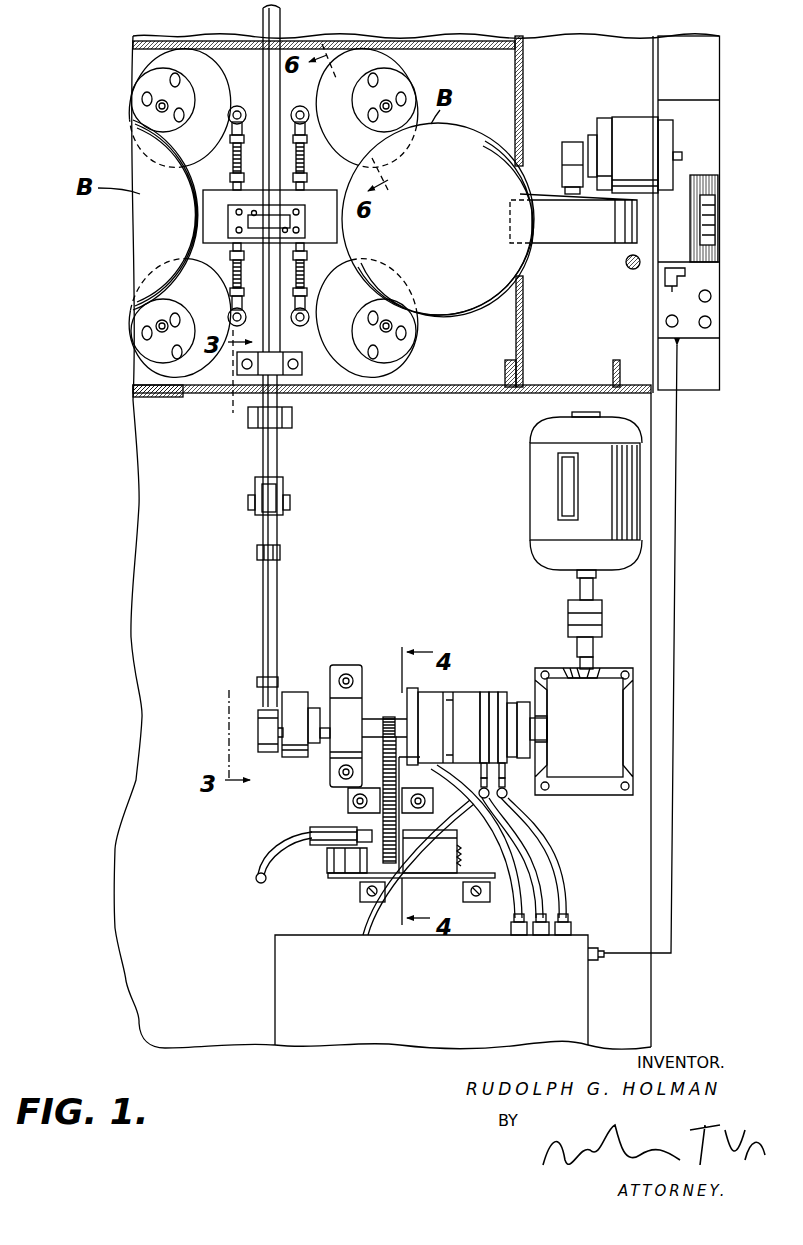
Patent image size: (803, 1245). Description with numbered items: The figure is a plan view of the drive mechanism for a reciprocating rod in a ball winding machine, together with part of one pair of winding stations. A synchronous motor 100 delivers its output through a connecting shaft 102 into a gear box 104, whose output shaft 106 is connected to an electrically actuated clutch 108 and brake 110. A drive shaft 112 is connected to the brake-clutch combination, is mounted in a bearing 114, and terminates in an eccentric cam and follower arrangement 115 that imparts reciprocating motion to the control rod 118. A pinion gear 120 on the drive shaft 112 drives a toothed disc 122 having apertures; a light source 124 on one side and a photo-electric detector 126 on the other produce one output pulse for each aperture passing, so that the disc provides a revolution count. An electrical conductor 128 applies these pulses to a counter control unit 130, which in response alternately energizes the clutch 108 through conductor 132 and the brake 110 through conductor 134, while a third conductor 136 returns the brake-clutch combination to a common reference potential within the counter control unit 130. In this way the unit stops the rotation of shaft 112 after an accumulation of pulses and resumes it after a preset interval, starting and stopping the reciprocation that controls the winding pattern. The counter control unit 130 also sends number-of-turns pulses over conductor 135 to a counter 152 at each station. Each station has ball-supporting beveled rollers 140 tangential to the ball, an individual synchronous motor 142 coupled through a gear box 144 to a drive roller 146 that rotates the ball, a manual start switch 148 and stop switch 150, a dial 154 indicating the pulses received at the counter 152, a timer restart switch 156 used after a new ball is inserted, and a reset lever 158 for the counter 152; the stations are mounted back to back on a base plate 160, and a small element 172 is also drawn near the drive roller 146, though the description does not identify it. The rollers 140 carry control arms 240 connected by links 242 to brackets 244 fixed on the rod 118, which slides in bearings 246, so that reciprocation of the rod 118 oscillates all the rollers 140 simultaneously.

The synchronous motor 100 is at (540, 478).
The connecting shaft 102 is at (578, 580).
The gear box 104 is at (584, 731).
The output shaft 106 is at (540, 738).
The clutch 108 is at (501, 692).
The brake 110 is at (484, 692).
The drive shaft 112 is at (404, 701).
The bearing 114 is at (355, 700).
The eccentric cam and follower arrangement 115 is at (296, 692).
The control rod 118 is at (262, 15).
The pinion gear 120 is at (395, 720).
The toothed disc 122 is at (383, 775).
The light source 124 is at (332, 828).
The photo-electric detector 126 is at (419, 838).
The electrical conductor 128 is at (380, 918).
The counter control unit 130 is at (275, 968).
The conductor 132 is at (528, 862).
The conductor 134 is at (545, 864).
The conductor 135 is at (673, 817).
The third conductor 136 is at (512, 895).
The beveled rollers 140 is at (196, 60).
The synchronous motor 142 is at (622, 117).
The gear box 144 is at (572, 142).
The drive roller 146 is at (558, 238).
The start switch 148 is at (666, 320).
The stop switch 150 is at (712, 325).
The counter 152 is at (707, 180).
The dial 154 is at (715, 224).
The timer restart switch 156 is at (711, 293).
The reset lever 158 is at (675, 289).
The base plate 160 is at (427, 60).
The pilot light 172 is at (628, 270).
The control arm 240 is at (236, 106).
The links 242 is at (296, 155).
The brackets 244 is at (228, 218).
The bearings 246 is at (284, 352).